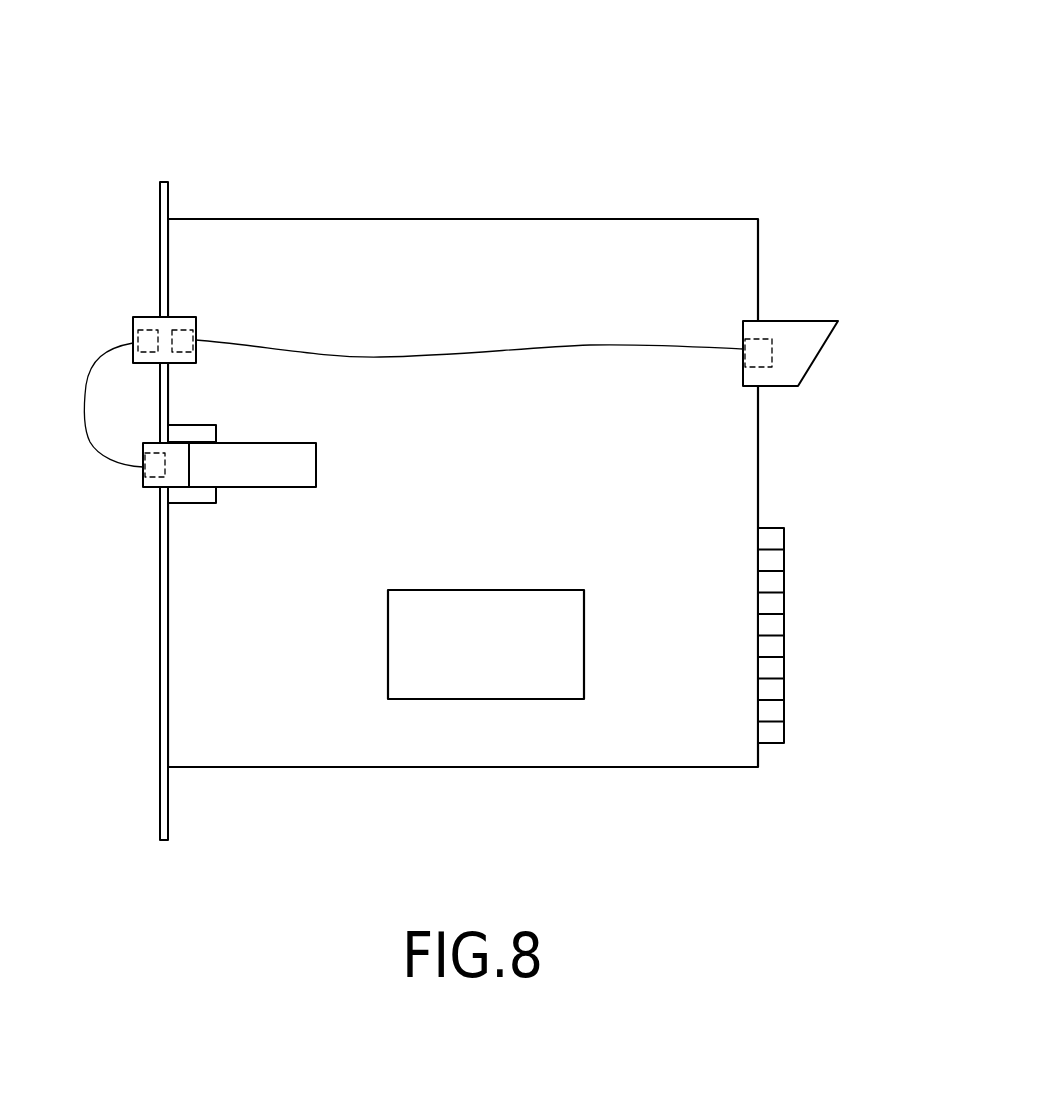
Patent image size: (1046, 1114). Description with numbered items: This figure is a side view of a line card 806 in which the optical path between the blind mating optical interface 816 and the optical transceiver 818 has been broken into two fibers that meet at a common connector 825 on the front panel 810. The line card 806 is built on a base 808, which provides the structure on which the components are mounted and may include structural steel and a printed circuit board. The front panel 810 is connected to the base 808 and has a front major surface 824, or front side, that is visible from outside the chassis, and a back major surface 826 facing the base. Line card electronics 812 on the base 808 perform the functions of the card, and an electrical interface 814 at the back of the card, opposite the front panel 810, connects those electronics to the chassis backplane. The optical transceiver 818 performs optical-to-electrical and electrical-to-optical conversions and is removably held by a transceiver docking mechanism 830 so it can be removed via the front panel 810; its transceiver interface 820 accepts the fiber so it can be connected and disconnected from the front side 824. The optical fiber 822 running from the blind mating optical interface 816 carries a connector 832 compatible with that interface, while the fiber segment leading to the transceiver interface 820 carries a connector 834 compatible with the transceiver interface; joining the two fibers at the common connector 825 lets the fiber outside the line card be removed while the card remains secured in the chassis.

The line card 806 is at (700, 54).
The base 808 is at (640, 219).
The front panel 810 is at (160, 285).
The line card electronics 812 is at (584, 643).
The electrical interface 814 is at (773, 528).
The blind mating optical interface 816 is at (800, 321).
The optical transceiver 818 is at (316, 462).
The transceiver interface 820 is at (143, 485).
The optical fiber 822 is at (456, 355).
The front major surface 824 is at (159, 190).
The common connector 825 is at (187, 317).
The back major surface 826 is at (170, 207).
The transceiver docking mechanism 830 is at (195, 425).
The connector 832 is at (763, 367).
The connector 834 is at (155, 478).